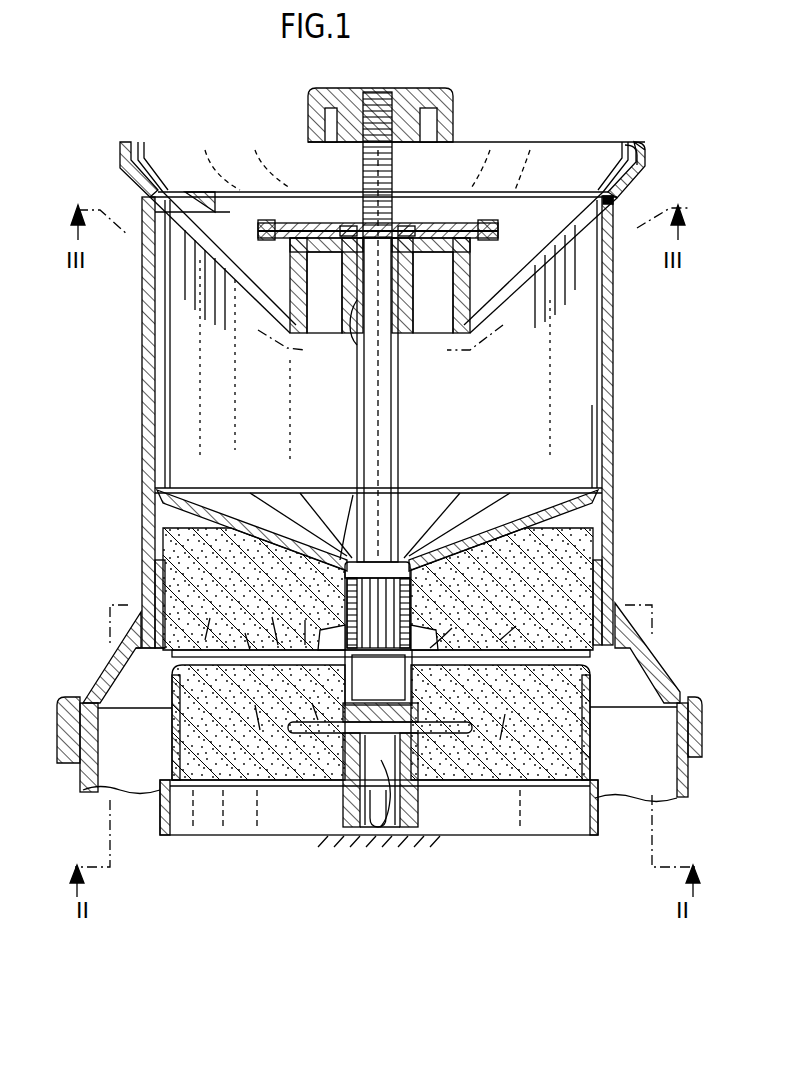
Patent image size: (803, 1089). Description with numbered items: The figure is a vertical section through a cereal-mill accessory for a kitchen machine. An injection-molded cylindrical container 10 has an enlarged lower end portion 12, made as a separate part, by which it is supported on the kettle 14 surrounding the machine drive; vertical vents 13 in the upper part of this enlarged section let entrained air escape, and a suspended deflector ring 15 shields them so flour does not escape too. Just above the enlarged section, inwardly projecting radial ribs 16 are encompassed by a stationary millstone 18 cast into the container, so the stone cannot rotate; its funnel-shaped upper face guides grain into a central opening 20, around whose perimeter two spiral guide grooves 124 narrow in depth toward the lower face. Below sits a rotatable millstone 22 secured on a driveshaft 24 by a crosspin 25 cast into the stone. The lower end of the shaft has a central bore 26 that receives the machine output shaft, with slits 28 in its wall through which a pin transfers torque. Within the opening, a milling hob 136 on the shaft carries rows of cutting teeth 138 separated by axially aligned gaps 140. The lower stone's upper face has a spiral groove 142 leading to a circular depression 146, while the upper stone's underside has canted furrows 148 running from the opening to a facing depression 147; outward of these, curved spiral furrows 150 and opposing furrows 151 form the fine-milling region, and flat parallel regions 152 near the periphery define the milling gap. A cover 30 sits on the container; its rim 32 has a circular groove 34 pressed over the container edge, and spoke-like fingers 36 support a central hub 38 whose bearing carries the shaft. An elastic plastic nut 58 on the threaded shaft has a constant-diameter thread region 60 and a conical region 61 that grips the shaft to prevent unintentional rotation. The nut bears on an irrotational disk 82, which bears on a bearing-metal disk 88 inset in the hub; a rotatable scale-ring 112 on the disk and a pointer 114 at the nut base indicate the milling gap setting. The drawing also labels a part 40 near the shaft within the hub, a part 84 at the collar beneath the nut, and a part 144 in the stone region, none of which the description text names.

The cylindrical container 10 is at (607, 387).
The enlarged lower end portion 12 is at (648, 652).
The vertical vents 13 is at (123, 650).
The kettle 14 is at (88, 792).
The suspended deflector ring 15 is at (115, 710).
The inwardly projecting radial ribs 16 is at (613, 553).
The stationary millstone 18 is at (613, 587).
The central opening 20 is at (436, 543).
The rotatable millstone 22 is at (503, 786).
The driveshaft 24 is at (329, 782).
The crosspin 25 is at (458, 740).
The central bore 26 is at (398, 828).
The slits 28 is at (380, 822).
The cover 30 is at (567, 203).
The rim portion 32 is at (641, 153).
The circular groove 34 is at (613, 203).
The spoke-like fingers 36 is at (533, 237).
The central hub 38 is at (463, 305).
The spindle tube 40 is at (362, 320).
The nut 58 is at (342, 172).
The first threaded region 60 is at (421, 160).
The conical threaded portion 61 is at (410, 92).
The disk 82 is at (467, 238).
The collar plate 84 is at (333, 207).
The disk of bearing metal 88 is at (445, 233).
The scale-ring 112 is at (203, 207).
The pointer 114 is at (283, 198).
The guide grooves 124 is at (327, 537).
The milling hob 136 is at (352, 560).
The cutting teeth 138 is at (405, 560).
The gaps 140 is at (380, 650).
The spiral groove 142 is at (312, 698).
The filter medium 144 is at (460, 618).
The circular depression 146 is at (507, 713).
The circular depression 147 is at (395, 619).
The furrows 148 is at (408, 617).
The curved spiral furrows 150 is at (407, 703).
The spiral furrows 151 is at (402, 624).
The flat and parallel regions 152 is at (208, 648).